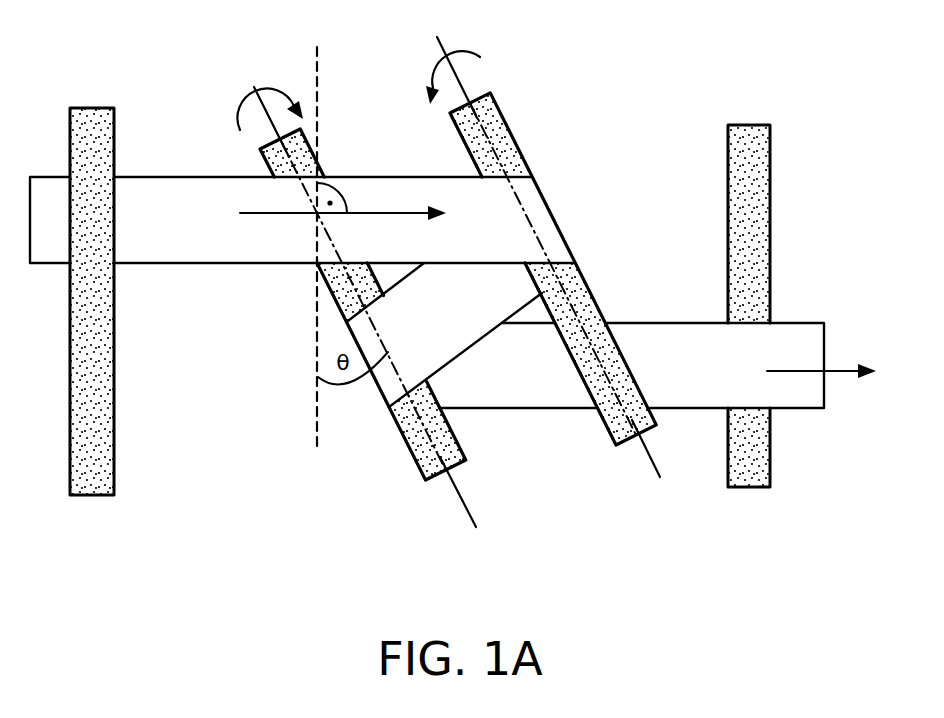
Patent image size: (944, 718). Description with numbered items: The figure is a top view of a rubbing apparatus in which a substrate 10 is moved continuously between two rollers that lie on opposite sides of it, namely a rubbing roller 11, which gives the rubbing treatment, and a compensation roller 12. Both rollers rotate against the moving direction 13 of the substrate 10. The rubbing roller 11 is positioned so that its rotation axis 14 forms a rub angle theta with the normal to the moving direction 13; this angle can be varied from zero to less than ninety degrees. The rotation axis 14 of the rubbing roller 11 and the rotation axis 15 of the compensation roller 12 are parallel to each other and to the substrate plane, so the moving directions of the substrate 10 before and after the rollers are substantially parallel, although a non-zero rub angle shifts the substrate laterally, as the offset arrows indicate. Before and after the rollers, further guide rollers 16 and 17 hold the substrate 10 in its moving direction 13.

The substrate 10 is at (167, 190).
The rubbing roller 11 is at (308, 145).
The compensation roller 12 is at (521, 145).
The moving direction before contacting the rollers 13 is at (273, 222).
The rotation axis of the rubbing roller 14 is at (462, 492).
The rotation axis of the compensation roller 15 is at (657, 458).
The guide roller 16 is at (102, 482).
The guide roller 17 is at (757, 478).